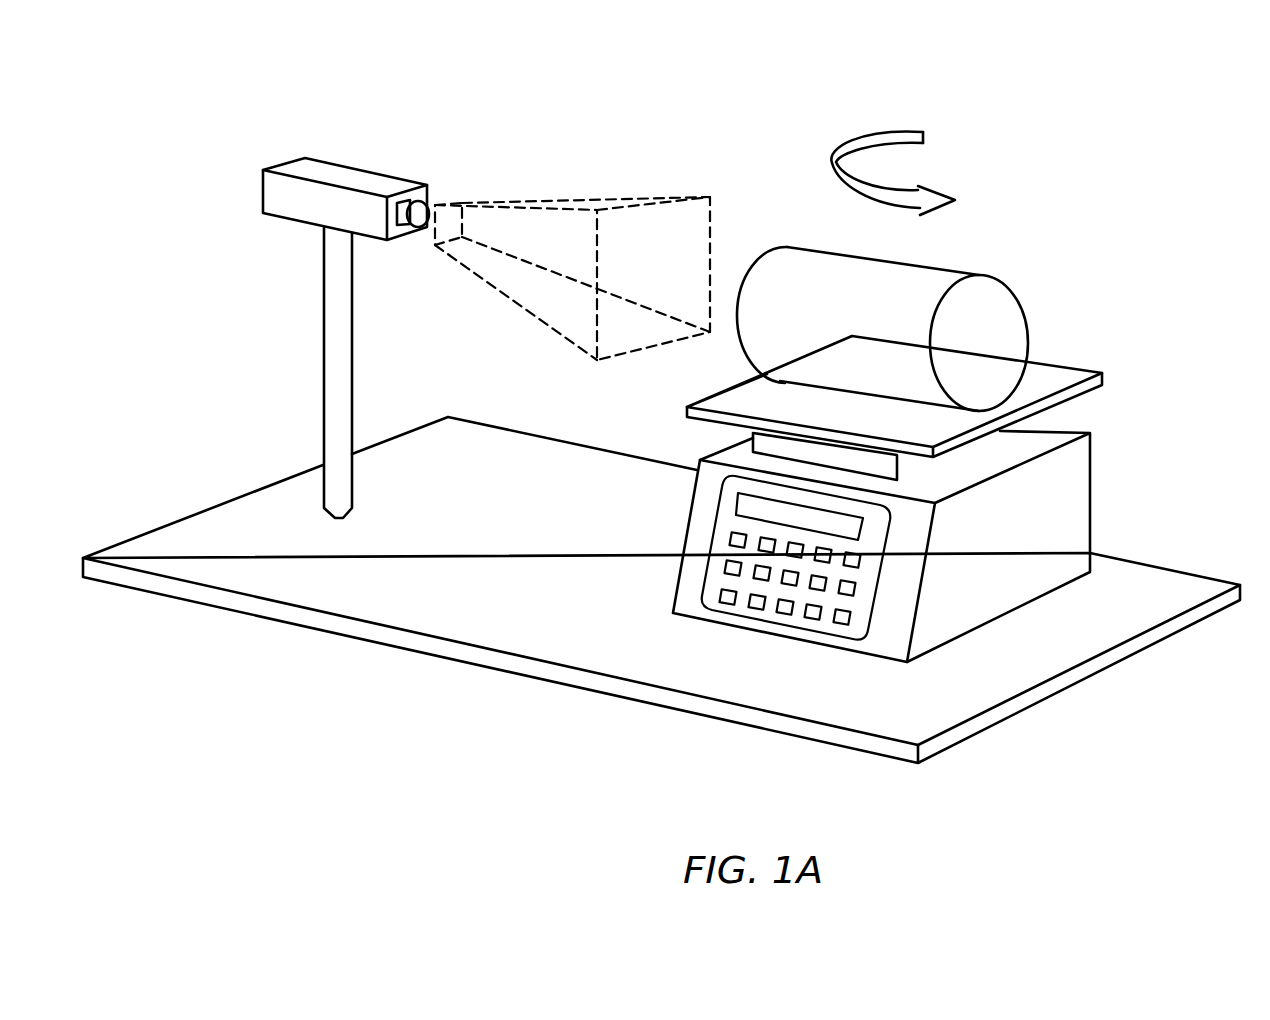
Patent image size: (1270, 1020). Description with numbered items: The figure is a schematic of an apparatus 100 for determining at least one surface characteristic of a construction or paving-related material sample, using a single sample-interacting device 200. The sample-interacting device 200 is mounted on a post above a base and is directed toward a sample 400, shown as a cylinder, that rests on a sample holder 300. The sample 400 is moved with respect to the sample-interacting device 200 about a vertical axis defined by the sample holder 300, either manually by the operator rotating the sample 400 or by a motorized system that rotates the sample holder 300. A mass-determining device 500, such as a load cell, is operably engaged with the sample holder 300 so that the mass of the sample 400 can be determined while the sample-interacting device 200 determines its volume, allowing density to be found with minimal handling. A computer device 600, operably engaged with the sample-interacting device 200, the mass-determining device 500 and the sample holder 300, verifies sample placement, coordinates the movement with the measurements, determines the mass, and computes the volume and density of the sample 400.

The apparatus 100 is at (1100, 119).
The sample-interacting device 200 is at (277, 195).
The sample holder 300 is at (1057, 377).
The sample 400 is at (883, 333).
The mass-determining device 500 is at (910, 468).
The computer device 600 is at (902, 577).